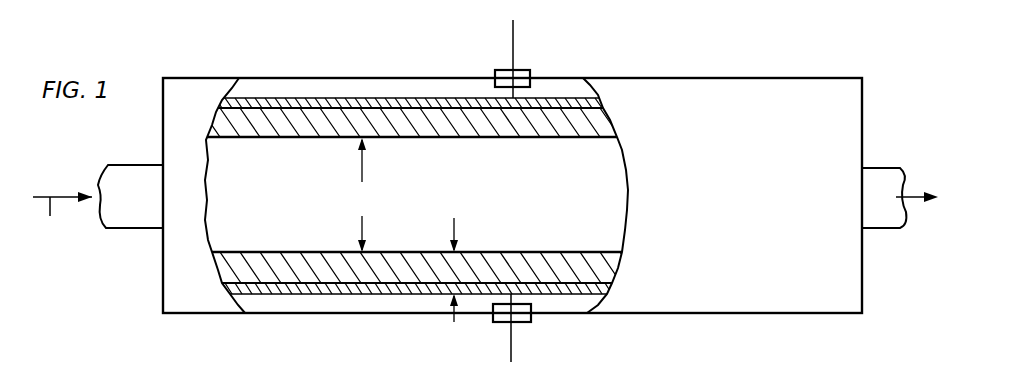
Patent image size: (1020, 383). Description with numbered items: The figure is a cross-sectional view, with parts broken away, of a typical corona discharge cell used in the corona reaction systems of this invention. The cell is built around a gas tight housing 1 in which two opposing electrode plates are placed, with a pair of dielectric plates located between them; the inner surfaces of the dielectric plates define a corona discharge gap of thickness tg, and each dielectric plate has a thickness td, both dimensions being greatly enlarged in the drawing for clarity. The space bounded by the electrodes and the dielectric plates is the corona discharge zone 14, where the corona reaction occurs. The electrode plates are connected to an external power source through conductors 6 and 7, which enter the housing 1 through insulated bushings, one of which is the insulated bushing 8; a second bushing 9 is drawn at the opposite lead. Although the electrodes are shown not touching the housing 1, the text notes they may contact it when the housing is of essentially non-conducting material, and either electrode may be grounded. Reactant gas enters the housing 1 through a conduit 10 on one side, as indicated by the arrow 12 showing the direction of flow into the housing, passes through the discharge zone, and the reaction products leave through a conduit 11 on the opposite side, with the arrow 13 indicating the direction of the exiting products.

The gas tight housing 1 is at (690, 79).
The conductor 6 is at (515, 42).
The conductor 7 is at (512, 347).
The insulated bushing 8 is at (520, 78).
The terminal connector (bottom) 9 is at (493, 316).
The conduit 10 is at (119, 222).
The conduit 11 is at (885, 224).
The arrow 12 is at (62, 219).
The arrow 13 is at (912, 195).
The corona discharge zone 14 is at (566, 201).